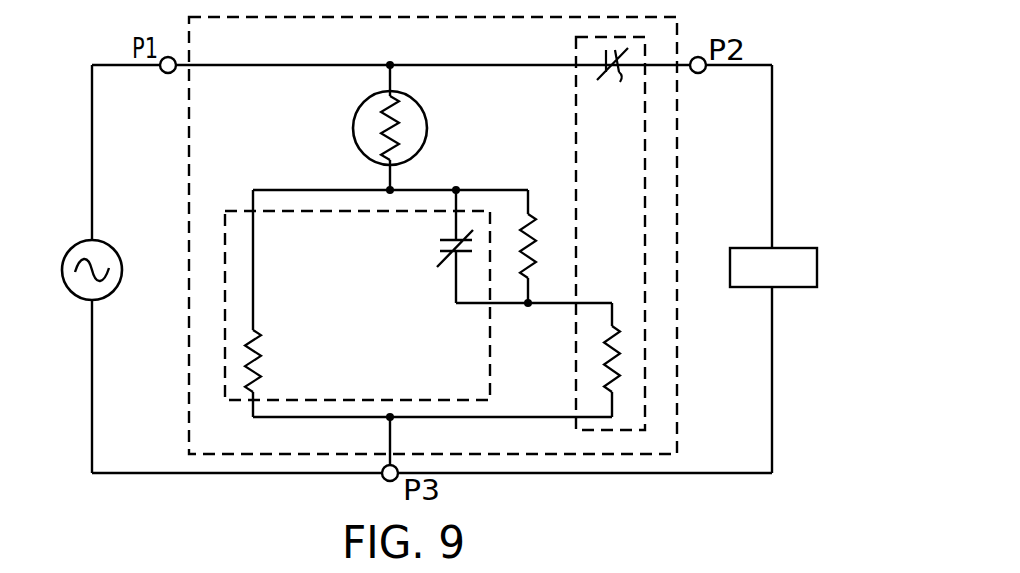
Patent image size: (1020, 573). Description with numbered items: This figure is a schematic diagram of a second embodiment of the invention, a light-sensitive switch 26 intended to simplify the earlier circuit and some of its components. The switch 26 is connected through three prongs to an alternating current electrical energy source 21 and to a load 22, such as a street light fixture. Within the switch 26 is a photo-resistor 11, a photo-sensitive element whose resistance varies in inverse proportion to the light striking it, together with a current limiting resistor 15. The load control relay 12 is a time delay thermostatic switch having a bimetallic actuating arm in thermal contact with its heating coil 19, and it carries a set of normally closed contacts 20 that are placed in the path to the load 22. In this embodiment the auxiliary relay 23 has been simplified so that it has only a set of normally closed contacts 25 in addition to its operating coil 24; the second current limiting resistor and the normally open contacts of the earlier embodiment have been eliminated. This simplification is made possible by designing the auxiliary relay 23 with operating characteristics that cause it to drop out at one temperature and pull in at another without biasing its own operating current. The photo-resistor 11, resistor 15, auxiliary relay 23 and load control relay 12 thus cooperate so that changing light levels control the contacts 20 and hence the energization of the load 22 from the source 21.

The photo-resistor 11 is at (418, 111).
The load control relay 12 is at (645, 150).
The current limiting resistor 15 is at (535, 226).
The heating coil 19 is at (613, 330).
The normally closed contacts 20 is at (617, 82).
The alternating current electrical energy source 21 is at (114, 250).
The load 22 is at (805, 248).
The auxiliary relay 23 is at (490, 368).
The operating coil 24 is at (257, 333).
The normally closed contacts 25 is at (446, 240).
The light-sensitive switch 26 is at (677, 212).